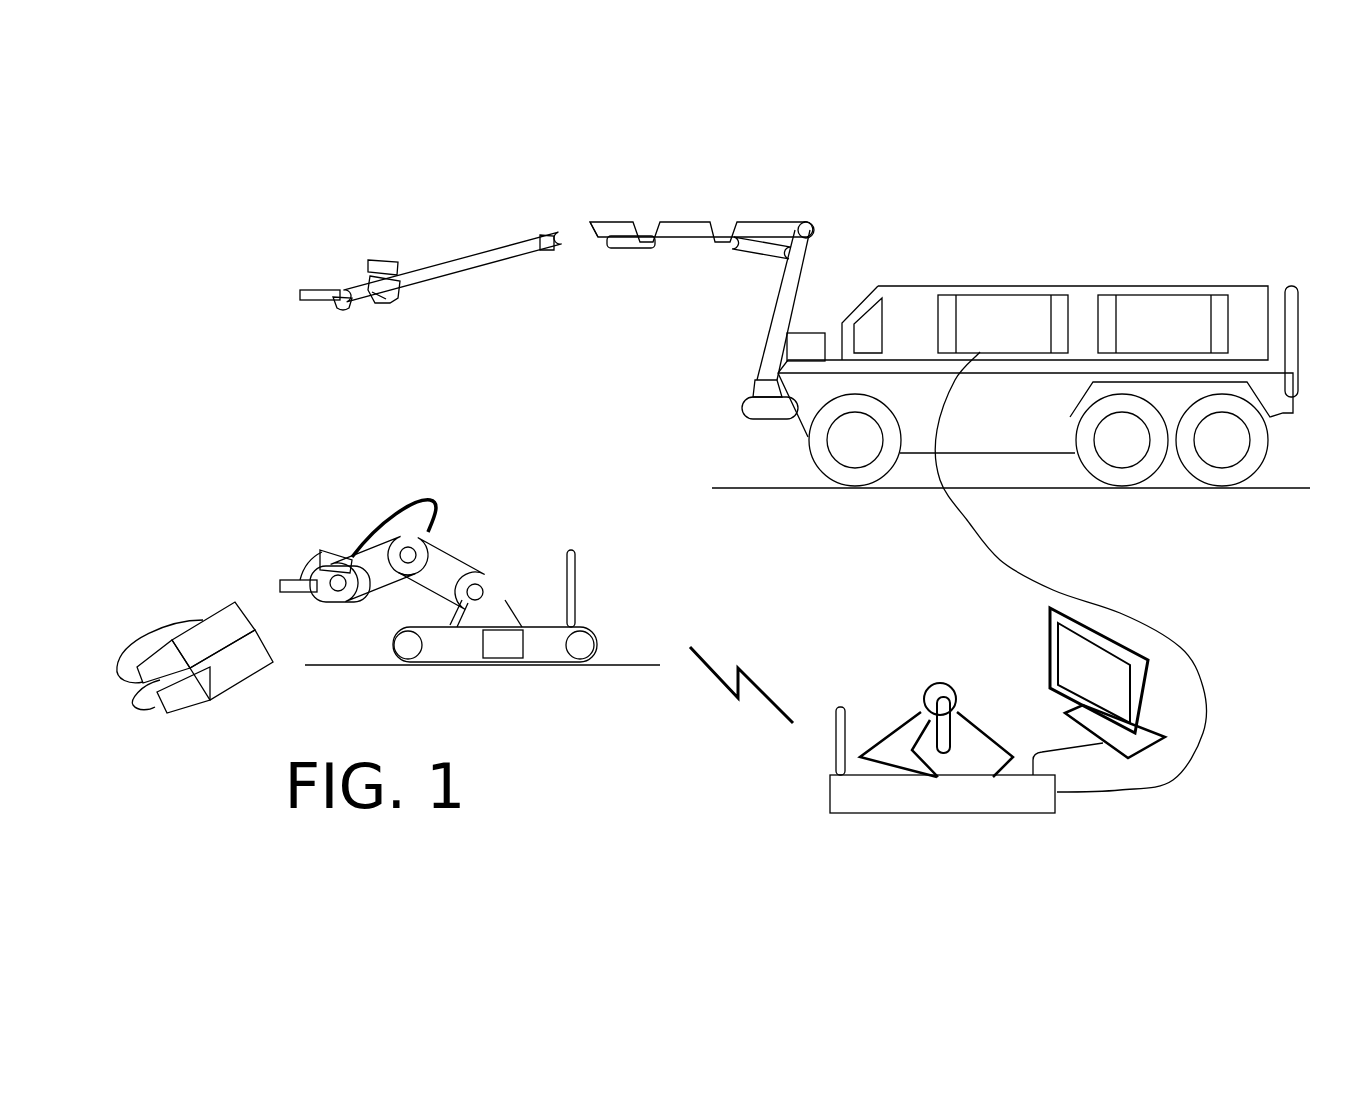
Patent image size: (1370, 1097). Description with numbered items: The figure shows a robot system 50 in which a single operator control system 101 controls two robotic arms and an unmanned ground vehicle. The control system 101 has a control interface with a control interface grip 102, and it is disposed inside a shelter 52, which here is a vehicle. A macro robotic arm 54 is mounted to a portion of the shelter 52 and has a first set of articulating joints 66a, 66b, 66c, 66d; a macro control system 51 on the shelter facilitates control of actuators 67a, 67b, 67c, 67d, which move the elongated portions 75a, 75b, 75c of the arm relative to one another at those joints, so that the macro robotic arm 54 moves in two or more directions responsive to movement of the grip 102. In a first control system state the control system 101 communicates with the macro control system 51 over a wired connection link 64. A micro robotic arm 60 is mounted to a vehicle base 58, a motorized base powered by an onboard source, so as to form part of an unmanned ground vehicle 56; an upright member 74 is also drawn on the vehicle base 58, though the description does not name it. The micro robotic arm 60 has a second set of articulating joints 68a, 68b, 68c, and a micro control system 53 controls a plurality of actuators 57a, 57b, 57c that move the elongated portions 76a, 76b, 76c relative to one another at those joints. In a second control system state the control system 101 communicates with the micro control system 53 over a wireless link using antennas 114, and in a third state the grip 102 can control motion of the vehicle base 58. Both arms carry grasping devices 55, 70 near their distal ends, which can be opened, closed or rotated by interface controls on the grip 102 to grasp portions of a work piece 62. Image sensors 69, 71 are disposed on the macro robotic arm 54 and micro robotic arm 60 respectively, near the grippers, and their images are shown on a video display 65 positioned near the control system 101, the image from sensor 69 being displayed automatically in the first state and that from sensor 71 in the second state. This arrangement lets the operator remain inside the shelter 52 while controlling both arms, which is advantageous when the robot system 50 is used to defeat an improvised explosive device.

The robot system 50 is at (566, 269).
The macro control system 51 is at (806, 347).
The shelter 52 is at (1006, 227).
The micro control system 53 is at (495, 644).
The macro robotic arm 54 is at (477, 143).
The grasping device 55 is at (292, 268).
The unmanned ground vehicle (UGV) 56 is at (561, 480).
The actuator 57a is at (467, 602).
The actuator 57b is at (430, 498).
The actuator 57c is at (322, 565).
The vehicle base 58 is at (583, 640).
The micro robotic arm 60 is at (317, 526).
The work piece 62 is at (156, 570).
The wired connection link 64 is at (1195, 646).
The video display 65 is at (1050, 624).
The articulating joint 66a is at (737, 381).
The articulating joint 66b is at (791, 210).
The articulating joint 66c is at (590, 199).
The articulating joint 66d is at (345, 252).
The actuator 67a is at (768, 415).
The actuator 67b is at (752, 265).
The actuator 67c is at (607, 250).
The actuator 67d is at (385, 304).
The articulating joint 68a is at (505, 601).
The articulating joint 68b is at (437, 541).
The articulating joint 68c is at (366, 604).
The image sensor 69 is at (392, 239).
The grasping device 70 is at (269, 560).
The image sensor 71 is at (346, 534).
The mast 74 is at (572, 560).
The elongated portion 75a is at (795, 332).
The elongated portion 75b is at (712, 224).
The elongated portion 75c is at (486, 258).
The elongated portion 76a is at (470, 568).
The elongated portion 76b is at (405, 575).
The elongated portion 76c is at (335, 602).
The control system 101 is at (1039, 851).
The control interface grip 102 is at (955, 742).
The antenna 114 is at (842, 728).